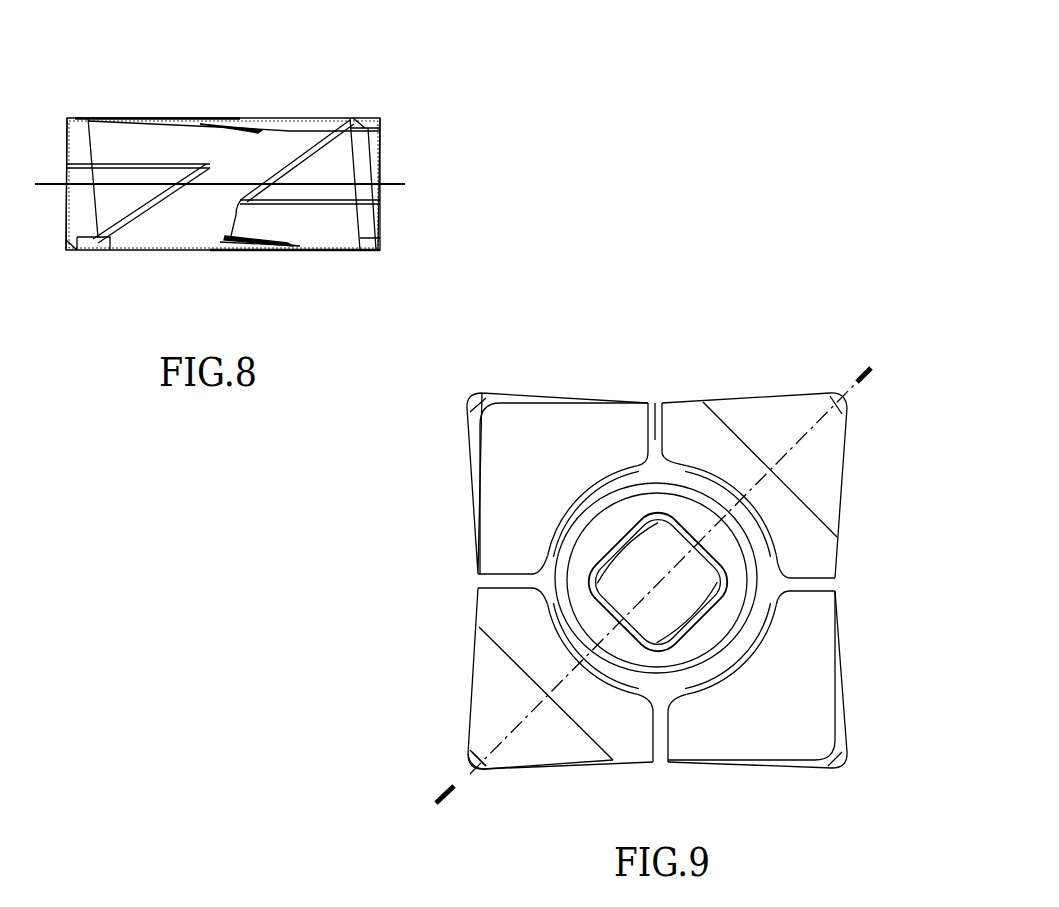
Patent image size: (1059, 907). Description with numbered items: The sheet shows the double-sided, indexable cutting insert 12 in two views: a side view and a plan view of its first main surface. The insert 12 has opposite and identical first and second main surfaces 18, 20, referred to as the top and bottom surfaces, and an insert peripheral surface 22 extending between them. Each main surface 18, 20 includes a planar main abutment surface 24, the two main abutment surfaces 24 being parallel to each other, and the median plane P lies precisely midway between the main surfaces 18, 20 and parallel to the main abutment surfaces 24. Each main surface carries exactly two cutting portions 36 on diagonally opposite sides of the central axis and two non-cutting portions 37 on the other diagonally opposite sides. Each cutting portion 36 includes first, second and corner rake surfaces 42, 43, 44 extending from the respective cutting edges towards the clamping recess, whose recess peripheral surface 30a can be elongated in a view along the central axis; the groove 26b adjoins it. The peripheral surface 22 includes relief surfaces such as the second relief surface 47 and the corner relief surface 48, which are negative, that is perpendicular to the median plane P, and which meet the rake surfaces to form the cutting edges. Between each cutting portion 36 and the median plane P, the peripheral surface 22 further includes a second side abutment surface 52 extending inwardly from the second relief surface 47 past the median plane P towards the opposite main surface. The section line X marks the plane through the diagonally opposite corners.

In FIG. 8, the cutting insert 12 is at (240, 80).
In FIG. 8, the first main surface 18 is at (280, 115).
In FIG. 9, the first main surface 18 is at (505, 522).
In FIG. 8, the second main surface 20 is at (277, 255).
In FIG. 8, the insert peripheral surface 22 is at (382, 168).
In FIG. 8, the main abutment surface 24 is at (330, 117).
In FIG. 9, the main abutment surface 24 is at (560, 420).
In FIG. 9, the groove 26b is at (656, 582).
In FIG. 9, the recess peripheral surface 30a is at (635, 546).
In FIG. 8, the cutting portion 36 is at (75, 108).
In FIG. 8, the non-cutting portion 37 is at (365, 110).
In FIG. 9, the first rake surface 42 is at (505, 755).
In FIG. 9, the second rake surface 43 is at (475, 750).
In FIG. 9, the corner rake surface 44 is at (472, 766).
In FIG. 8, the second relief surface 47 is at (108, 143).
In FIG. 8, the corner relief surface 48 is at (70, 138).
In FIG. 8, the second side abutment surface 52 is at (137, 180).
In FIG. 8, the median plane P is at (400, 184).
In FIG. 9, the section line X is at (876, 384).